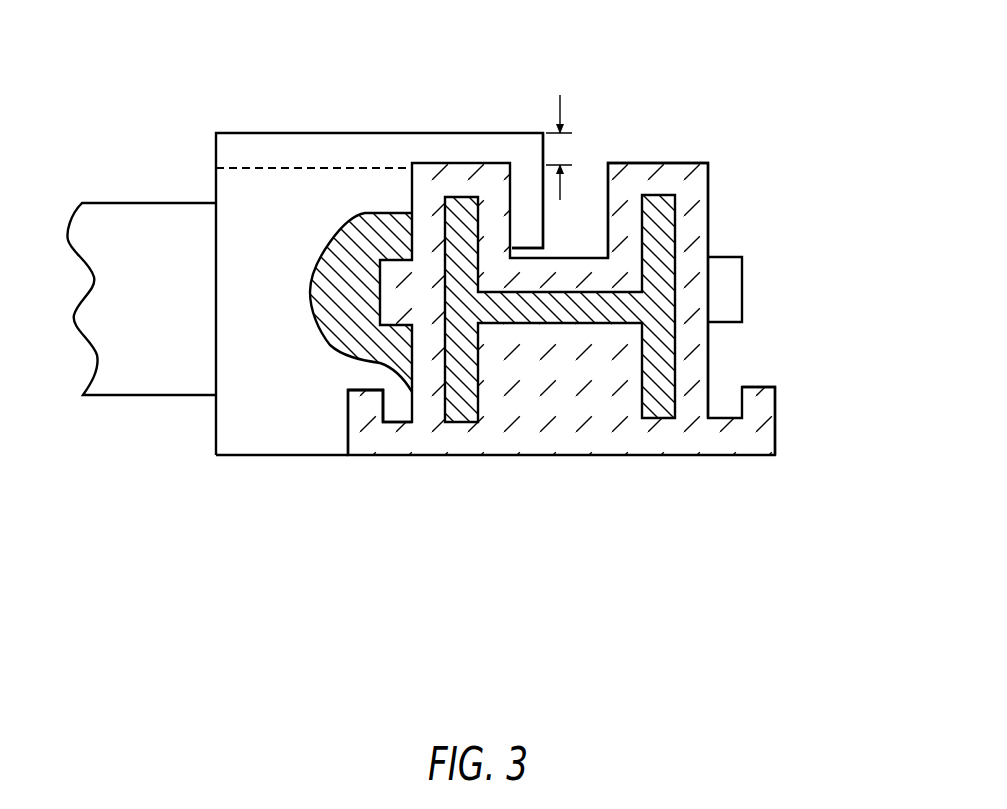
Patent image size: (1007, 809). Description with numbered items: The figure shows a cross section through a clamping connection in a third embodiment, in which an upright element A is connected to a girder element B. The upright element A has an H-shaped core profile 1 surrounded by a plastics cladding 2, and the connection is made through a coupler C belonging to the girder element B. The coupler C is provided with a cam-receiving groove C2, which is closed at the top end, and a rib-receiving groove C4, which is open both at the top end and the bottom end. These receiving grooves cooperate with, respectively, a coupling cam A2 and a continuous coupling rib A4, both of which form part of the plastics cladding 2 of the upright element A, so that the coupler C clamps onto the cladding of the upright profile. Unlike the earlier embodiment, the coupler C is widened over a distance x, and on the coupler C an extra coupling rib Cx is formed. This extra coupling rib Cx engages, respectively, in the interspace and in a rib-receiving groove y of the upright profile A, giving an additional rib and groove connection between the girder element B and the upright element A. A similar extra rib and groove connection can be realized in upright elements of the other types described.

The coupler C is at (232, 112).
The girder element B is at (138, 403).
The upright element A is at (532, 472).
The coupling cam A2 is at (770, 268).
The continuous coupling rib A4 is at (820, 398).
The H-shaped core profile 1 is at (555, 323).
The plastics cladding 2 is at (607, 435).
The cam-receiving groove C2 is at (390, 316).
The rib-receiving groove C4 is at (364, 400).
The extra coupling rib Cx is at (537, 205).
The distance x is at (557, 148).
The rib-receiving groove y is at (576, 222).